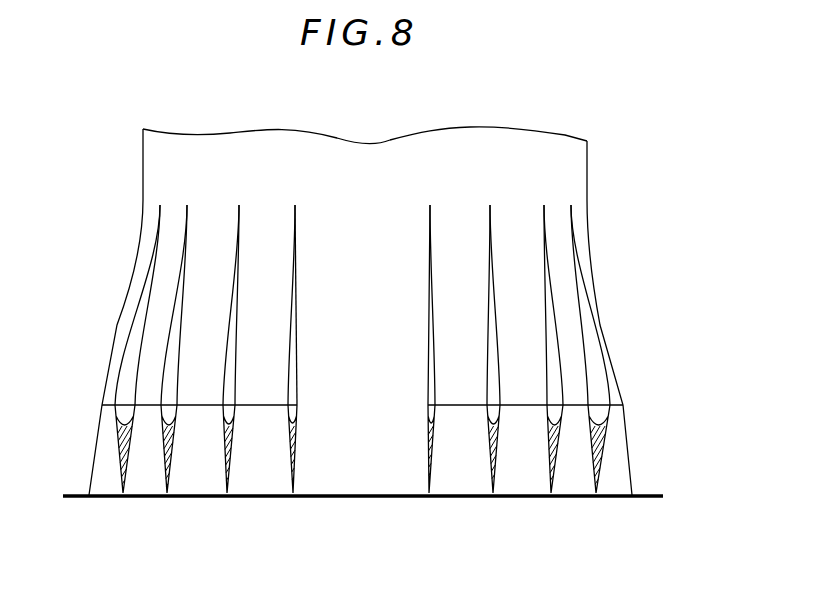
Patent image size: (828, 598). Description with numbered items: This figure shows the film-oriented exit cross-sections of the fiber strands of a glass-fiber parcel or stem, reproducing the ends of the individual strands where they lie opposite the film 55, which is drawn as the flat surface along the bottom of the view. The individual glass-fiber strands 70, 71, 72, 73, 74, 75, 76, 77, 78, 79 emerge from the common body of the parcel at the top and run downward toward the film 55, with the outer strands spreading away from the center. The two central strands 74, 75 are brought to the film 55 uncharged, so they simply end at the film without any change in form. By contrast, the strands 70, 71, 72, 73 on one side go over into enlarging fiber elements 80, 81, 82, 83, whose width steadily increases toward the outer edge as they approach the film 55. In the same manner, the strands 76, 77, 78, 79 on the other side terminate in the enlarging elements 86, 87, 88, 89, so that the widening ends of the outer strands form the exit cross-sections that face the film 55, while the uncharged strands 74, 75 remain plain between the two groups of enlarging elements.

The film 55 is at (667, 505).
The glass-fiber strand 70 is at (108, 383).
The glass-fiber strand 71 is at (150, 367).
The glass-fiber strand 72 is at (195, 333).
The glass-fiber strand 73 is at (243, 287).
The glass-fiber strand 74 is at (327, 480).
The glass-fiber strand 75 is at (402, 483).
The glass-fiber strand 76 is at (473, 297).
The glass-fiber strand 77 is at (530, 337).
The glass-fiber strand 78 is at (573, 375).
The glass-fiber strand 79 is at (617, 397).
The enlarging fiber element 80 is at (100, 484).
The enlarging fiber element 81 is at (145, 484).
The enlarging fiber element 82 is at (198, 484).
The enlarging fiber element 83 is at (260, 484).
The enlarging element 86 is at (452, 483).
The enlarging element 87 is at (520, 483).
The enlarging element 88 is at (568, 483).
The enlarging element 89 is at (617, 483).